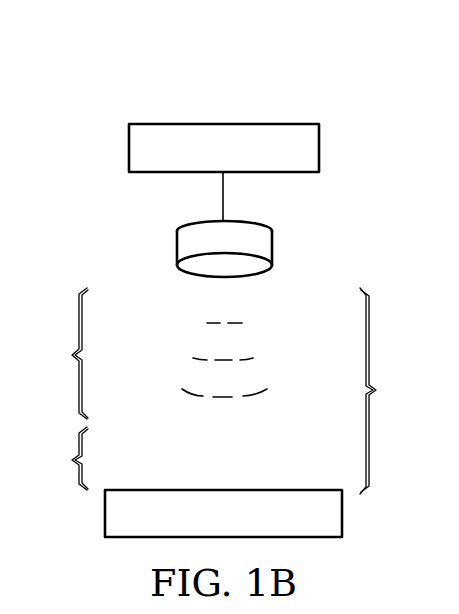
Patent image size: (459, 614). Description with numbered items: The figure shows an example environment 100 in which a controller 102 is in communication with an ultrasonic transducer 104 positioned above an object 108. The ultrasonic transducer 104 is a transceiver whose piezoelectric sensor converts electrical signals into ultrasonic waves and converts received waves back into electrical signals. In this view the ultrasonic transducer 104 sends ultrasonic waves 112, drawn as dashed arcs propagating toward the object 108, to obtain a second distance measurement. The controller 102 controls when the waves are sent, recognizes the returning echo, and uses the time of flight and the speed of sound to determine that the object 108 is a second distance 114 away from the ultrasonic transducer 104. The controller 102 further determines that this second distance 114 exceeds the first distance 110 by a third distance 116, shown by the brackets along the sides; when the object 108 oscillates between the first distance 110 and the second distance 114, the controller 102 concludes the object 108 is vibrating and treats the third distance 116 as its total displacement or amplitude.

The environment 100 is at (300, 70).
The controller 102 is at (319, 148).
The ultrasonic transducer 104 is at (272, 256).
The object 108 is at (342, 512).
The first distance 110 is at (57, 353).
The ultrasonic waves 112 is at (223, 361).
The second distance 114 is at (392, 391).
The third distance 116 is at (57, 458).